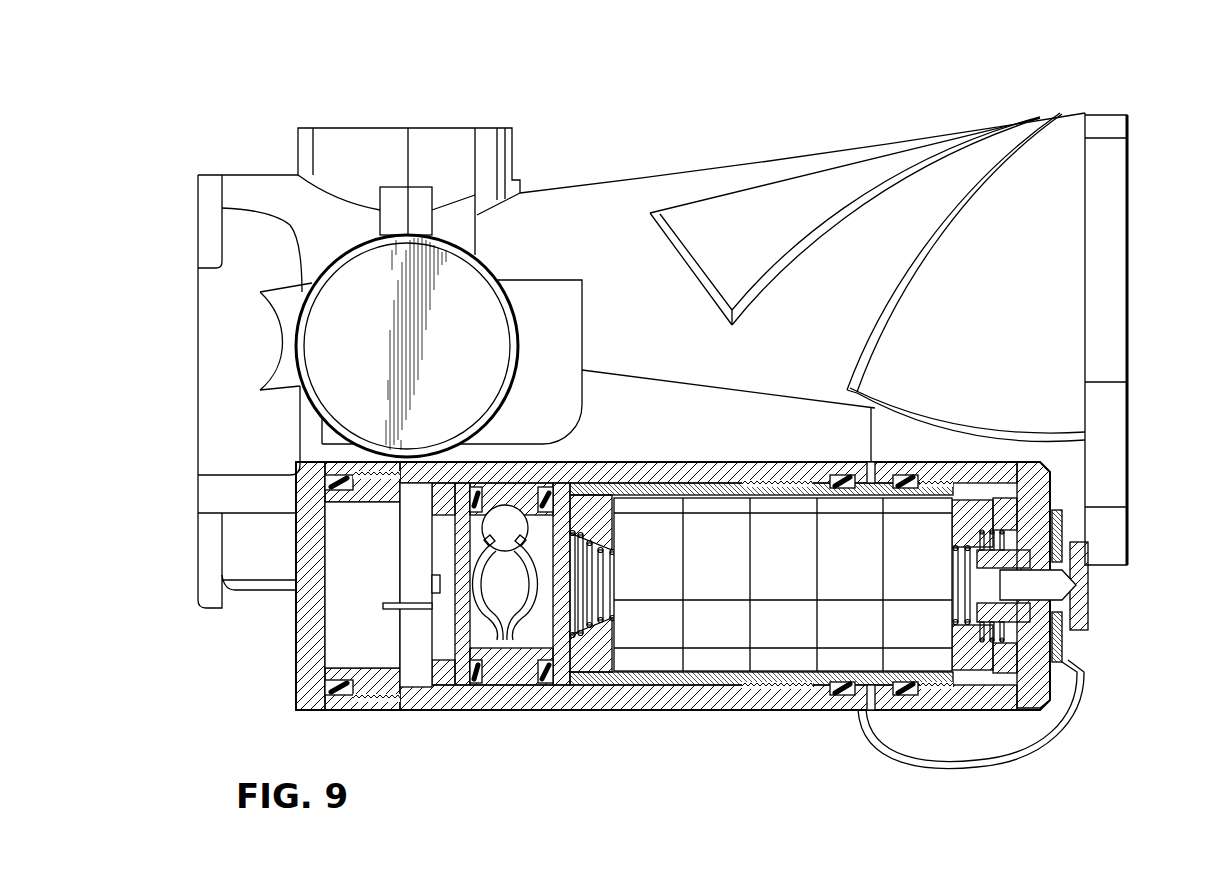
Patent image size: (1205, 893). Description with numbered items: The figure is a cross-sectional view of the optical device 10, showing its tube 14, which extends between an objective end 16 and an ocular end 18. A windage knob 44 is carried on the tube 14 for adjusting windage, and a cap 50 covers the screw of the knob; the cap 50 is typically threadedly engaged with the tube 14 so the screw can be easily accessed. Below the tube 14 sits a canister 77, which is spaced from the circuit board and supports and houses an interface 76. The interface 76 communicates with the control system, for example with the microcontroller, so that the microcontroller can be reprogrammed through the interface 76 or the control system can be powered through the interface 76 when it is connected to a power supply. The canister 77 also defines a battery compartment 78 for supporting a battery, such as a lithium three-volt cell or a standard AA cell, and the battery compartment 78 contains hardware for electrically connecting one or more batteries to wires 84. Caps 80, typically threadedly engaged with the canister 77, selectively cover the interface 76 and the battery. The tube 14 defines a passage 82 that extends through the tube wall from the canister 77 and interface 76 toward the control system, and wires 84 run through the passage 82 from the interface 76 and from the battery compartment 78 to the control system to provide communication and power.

The optical device 10 is at (627, 130).
The tube 14 is at (731, 163).
The objective end 16 is at (1109, 105).
The ocular end 18 is at (215, 152).
The windage knob 44 is at (326, 366).
The cap 50 is at (436, 376).
The interface 76 is at (383, 620).
The canister 77 is at (720, 700).
The battery compartment 78 is at (790, 632).
The cap 80 is at (305, 612).
The passage 82 is at (494, 528).
The wires 84 is at (505, 590).